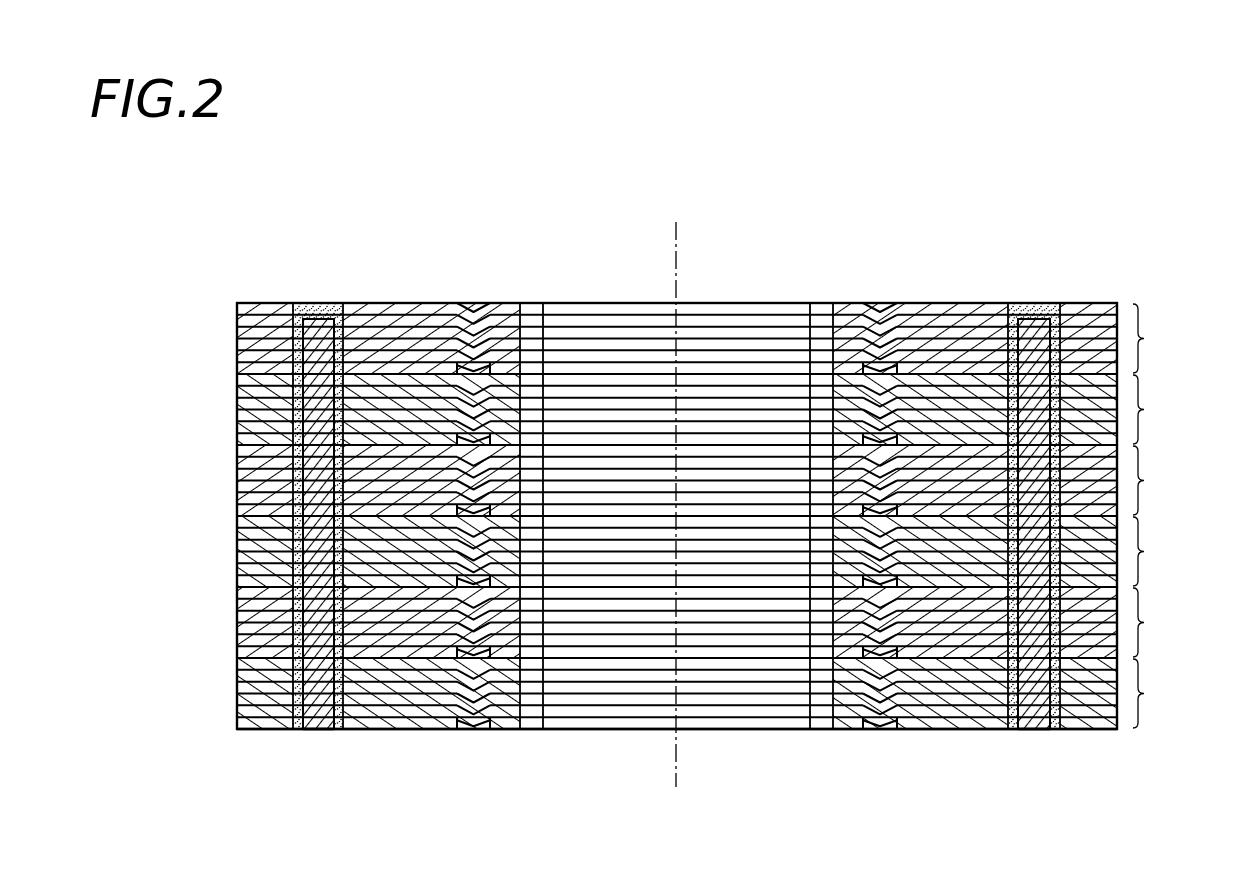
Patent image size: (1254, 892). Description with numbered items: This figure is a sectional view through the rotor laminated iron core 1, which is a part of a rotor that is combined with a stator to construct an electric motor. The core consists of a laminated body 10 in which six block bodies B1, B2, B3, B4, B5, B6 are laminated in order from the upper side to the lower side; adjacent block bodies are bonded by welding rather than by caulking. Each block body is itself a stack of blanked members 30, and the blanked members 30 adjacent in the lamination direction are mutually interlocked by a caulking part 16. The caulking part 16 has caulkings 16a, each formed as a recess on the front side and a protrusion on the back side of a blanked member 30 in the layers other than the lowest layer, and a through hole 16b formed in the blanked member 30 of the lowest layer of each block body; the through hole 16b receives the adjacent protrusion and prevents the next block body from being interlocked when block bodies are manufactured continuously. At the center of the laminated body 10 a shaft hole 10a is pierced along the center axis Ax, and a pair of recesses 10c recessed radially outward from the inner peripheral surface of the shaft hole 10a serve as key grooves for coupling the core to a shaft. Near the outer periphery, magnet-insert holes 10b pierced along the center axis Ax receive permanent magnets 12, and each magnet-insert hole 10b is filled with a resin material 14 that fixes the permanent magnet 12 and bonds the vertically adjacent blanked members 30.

The rotor laminated iron core 1 is at (1146, 222).
The laminated body 10 is at (172, 310).
The shaft hole 10a is at (642, 292).
The magnet-insert hole 10b is at (300, 730).
The recess 10c is at (532, 290).
The permanent magnet 12 is at (322, 324).
The resin material 14 is at (302, 308).
The caulking part 16 is at (467, 290).
The caulking 16a is at (478, 732).
The through hole 16b is at (471, 730).
The blanked member 30 is at (243, 722).
The center axis Ax is at (678, 237).
The block body B1 is at (1171, 338).
The block body B2 is at (1171, 409).
The block body B3 is at (1171, 480).
The block body B4 is at (1171, 551).
The block body B5 is at (1171, 622).
The block body B6 is at (1171, 693).